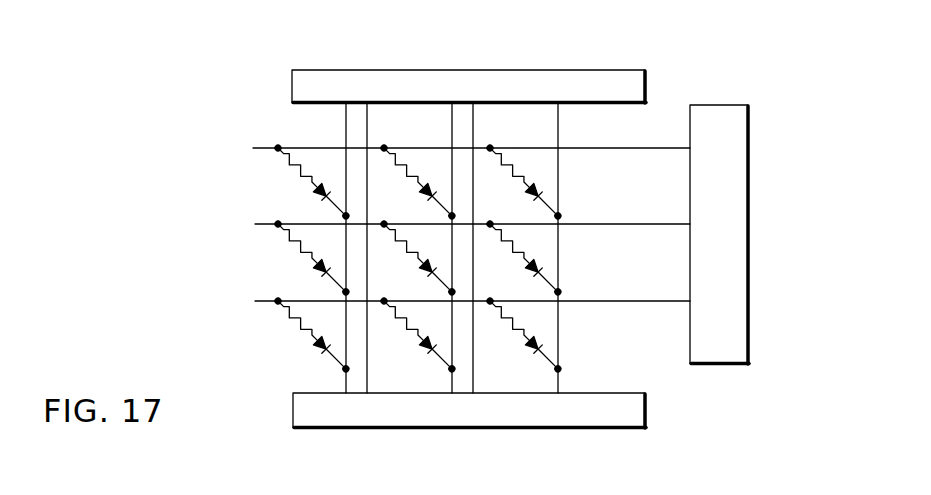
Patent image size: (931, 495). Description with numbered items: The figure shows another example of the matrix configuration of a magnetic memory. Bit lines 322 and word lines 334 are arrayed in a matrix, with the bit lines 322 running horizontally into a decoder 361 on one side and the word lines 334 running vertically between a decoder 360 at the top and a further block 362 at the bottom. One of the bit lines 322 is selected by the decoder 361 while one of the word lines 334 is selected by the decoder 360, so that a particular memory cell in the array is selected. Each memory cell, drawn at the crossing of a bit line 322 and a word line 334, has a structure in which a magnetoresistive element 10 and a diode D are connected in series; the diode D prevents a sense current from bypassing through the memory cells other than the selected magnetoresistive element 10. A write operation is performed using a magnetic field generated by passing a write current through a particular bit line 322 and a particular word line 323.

The magnetoresistive element 10 is at (295, 170).
The diode D is at (322, 198).
The bit line 322 is at (253, 148).
The word line 323 is at (368, 125).
The word line 334 is at (346, 128).
The decoder 360 is at (587, 78).
The decoder 361 is at (742, 226).
The sense amplifier / column circuit 362 is at (645, 407).